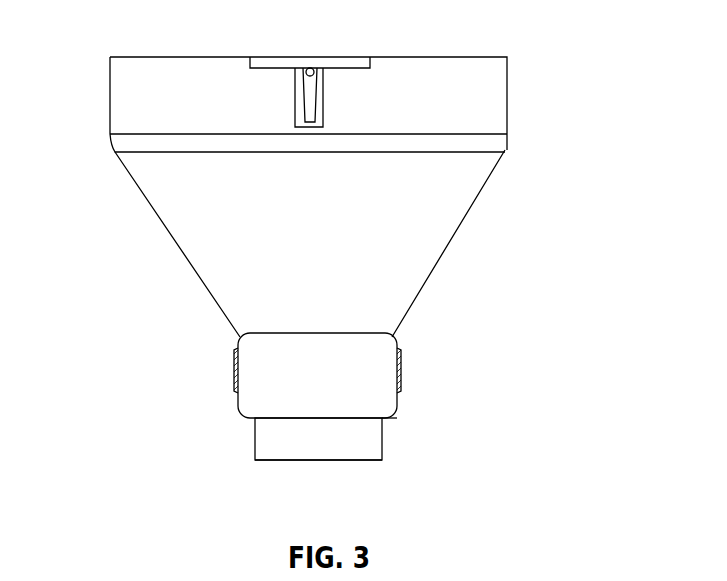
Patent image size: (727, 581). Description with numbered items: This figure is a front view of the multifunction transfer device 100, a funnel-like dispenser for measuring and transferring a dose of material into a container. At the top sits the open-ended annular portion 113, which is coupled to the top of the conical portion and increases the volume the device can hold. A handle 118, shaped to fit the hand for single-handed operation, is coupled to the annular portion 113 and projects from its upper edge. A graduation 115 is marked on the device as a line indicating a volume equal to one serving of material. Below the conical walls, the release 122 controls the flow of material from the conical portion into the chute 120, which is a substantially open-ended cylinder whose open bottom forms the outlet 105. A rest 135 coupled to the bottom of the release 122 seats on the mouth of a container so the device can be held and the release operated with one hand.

The multifunction transfer device 100 is at (126, 28).
The outlet 105 is at (355, 465).
The annular portion 113 is at (508, 95).
The graduation 115 is at (494, 162).
The handle 118 is at (318, 58).
The chute 120 is at (265, 437).
The release 122 is at (385, 352).
The rest 135 is at (393, 418).